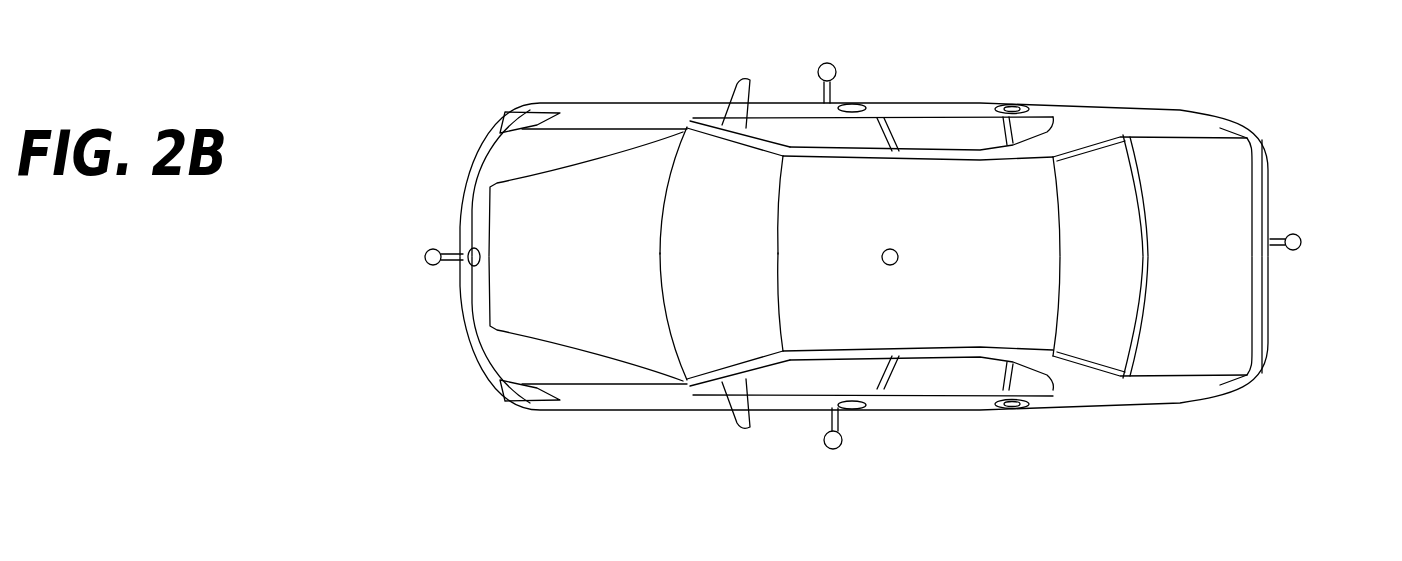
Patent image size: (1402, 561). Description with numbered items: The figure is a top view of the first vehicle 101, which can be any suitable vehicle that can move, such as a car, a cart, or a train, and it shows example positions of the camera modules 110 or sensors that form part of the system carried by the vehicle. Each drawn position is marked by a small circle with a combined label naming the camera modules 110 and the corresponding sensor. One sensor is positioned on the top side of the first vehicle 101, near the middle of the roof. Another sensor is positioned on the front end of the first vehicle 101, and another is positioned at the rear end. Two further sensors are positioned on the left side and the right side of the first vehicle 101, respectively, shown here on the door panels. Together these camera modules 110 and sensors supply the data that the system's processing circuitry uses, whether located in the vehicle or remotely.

The first vehicle 101 is at (1190, 61).
The camera modules 110 is at (832, 249).